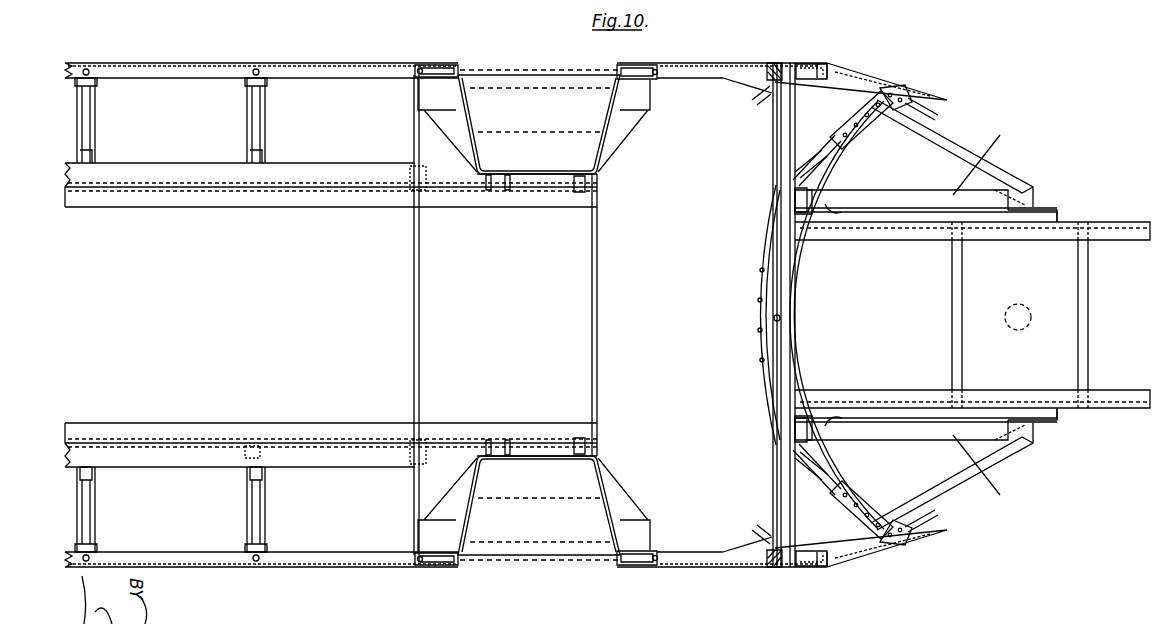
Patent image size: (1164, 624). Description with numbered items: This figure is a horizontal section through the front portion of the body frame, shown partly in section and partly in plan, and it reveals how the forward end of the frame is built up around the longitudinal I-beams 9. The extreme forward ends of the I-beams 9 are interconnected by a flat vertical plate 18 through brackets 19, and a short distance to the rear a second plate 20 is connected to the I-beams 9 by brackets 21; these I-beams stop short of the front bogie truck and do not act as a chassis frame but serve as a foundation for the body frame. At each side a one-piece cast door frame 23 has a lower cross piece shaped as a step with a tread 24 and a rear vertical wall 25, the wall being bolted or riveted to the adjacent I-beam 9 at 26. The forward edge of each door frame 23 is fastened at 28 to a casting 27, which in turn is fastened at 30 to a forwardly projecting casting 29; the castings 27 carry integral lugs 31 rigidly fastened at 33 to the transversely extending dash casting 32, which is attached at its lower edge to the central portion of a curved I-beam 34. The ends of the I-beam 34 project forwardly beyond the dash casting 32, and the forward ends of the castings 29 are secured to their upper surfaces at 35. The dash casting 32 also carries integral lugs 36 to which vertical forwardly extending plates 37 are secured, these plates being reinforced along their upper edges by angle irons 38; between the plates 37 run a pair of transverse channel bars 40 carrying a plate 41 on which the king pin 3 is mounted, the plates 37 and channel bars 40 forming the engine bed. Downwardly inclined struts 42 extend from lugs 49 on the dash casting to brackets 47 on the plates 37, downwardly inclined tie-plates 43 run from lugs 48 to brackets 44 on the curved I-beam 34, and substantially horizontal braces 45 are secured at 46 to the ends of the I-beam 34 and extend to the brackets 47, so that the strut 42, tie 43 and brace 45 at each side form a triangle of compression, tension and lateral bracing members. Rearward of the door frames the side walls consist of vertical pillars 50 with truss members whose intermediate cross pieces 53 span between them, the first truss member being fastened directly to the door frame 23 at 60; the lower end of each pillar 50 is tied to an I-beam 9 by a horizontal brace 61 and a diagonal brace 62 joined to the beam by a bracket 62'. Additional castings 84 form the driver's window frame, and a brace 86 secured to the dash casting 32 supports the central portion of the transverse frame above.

The king pin 3 is at (1028, 307).
The longitudinal I-beams 9 is at (248, 200).
The flat vertical plate 18 is at (598, 284).
The brackets 19 is at (580, 198).
The second plate 20 is at (420, 292).
The brackets 21 is at (430, 198).
The door frames 23 is at (606, 151).
The tread 24 is at (520, 540).
The rear vertical wall 25 is at (535, 462).
The bolted or riveted connection 26 is at (508, 192).
The casting 27 is at (706, 64).
The fastening 28 is at (656, 572).
The forwardly projecting casting 29 is at (848, 77).
The fastening 30 is at (830, 573).
The integral lugs 31 is at (768, 90).
The dash casting 32 is at (782, 462).
The fastening 33 is at (768, 108).
The curved I-beam 34 is at (803, 373).
The fastening 35 is at (893, 96).
The integral lugs 36 is at (823, 241).
The vertical forwardly extending plates 37 is at (893, 210).
The angle irons 38 is at (913, 241).
The channel bars 40 is at (953, 291).
The plate 41 is at (1040, 257).
The struts 42 is at (1018, 471).
The tie-plates 43 is at (820, 512).
The brackets 44 is at (858, 132).
The horizontal braces 45 is at (957, 130).
The fastening 46 is at (917, 105).
The brackets 47 is at (1058, 208).
The integral lugs 48 is at (800, 165).
The integral lugs 49 is at (840, 208).
The vertical pillars 50 is at (86, 66).
The intermediate horizontal cross piece 53 is at (338, 63).
The fastening 60 is at (426, 568).
The horizontal brace 61 is at (243, 500).
The diagonal brace 62 is at (188, 512).
The bracket 62' is at (276, 423).
The additional castings 84 is at (776, 569).
The brace 86 is at (780, 318).